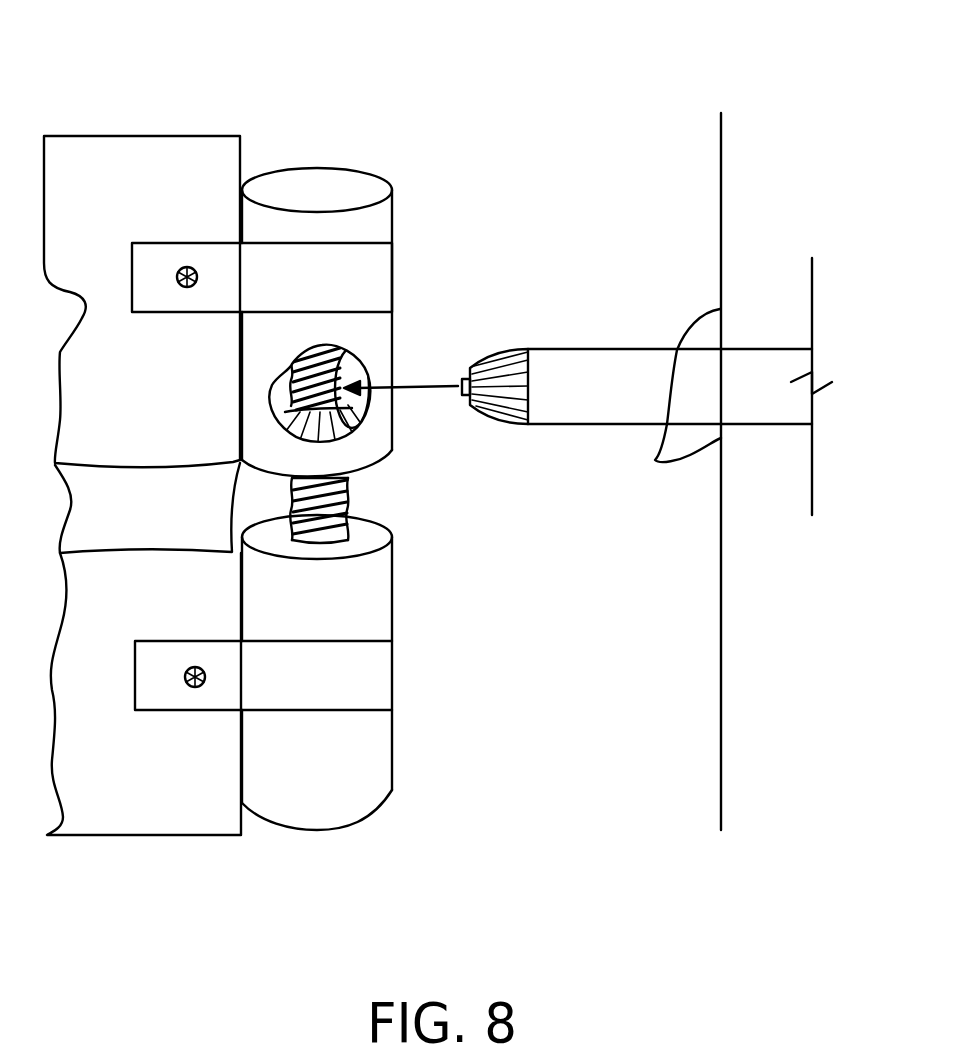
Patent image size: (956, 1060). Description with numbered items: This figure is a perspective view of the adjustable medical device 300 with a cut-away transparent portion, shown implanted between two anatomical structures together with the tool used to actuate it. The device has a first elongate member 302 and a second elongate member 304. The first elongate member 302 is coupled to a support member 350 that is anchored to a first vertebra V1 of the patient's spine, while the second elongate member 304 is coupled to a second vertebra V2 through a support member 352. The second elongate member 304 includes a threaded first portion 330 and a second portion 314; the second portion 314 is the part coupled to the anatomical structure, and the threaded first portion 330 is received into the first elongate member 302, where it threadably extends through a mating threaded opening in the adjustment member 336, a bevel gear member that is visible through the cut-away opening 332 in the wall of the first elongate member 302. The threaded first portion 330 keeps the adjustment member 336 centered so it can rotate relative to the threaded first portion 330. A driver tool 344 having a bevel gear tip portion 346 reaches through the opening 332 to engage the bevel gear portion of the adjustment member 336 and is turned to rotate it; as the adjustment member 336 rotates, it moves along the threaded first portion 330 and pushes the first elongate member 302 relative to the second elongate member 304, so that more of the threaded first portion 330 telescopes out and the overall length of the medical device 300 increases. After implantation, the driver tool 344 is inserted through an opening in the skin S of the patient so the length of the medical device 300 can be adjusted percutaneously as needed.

The adjustable medical device 300 is at (482, 421).
The first elongate member 302 is at (361, 322).
The second elongate member 304 is at (368, 672).
The second portion 314 is at (393, 575).
The threaded first portion 330 is at (348, 498).
The aperture 332 is at (357, 364).
The adjustment member 336 is at (357, 427).
The driver tool 344 is at (647, 386).
The bevel gear tip portion 346 is at (501, 360).
The support member 350 is at (398, 250).
The support member 352 is at (393, 677).
The first vertebra V1 is at (186, 149).
The second vertebra V2 is at (170, 812).
The skin S is at (723, 178).